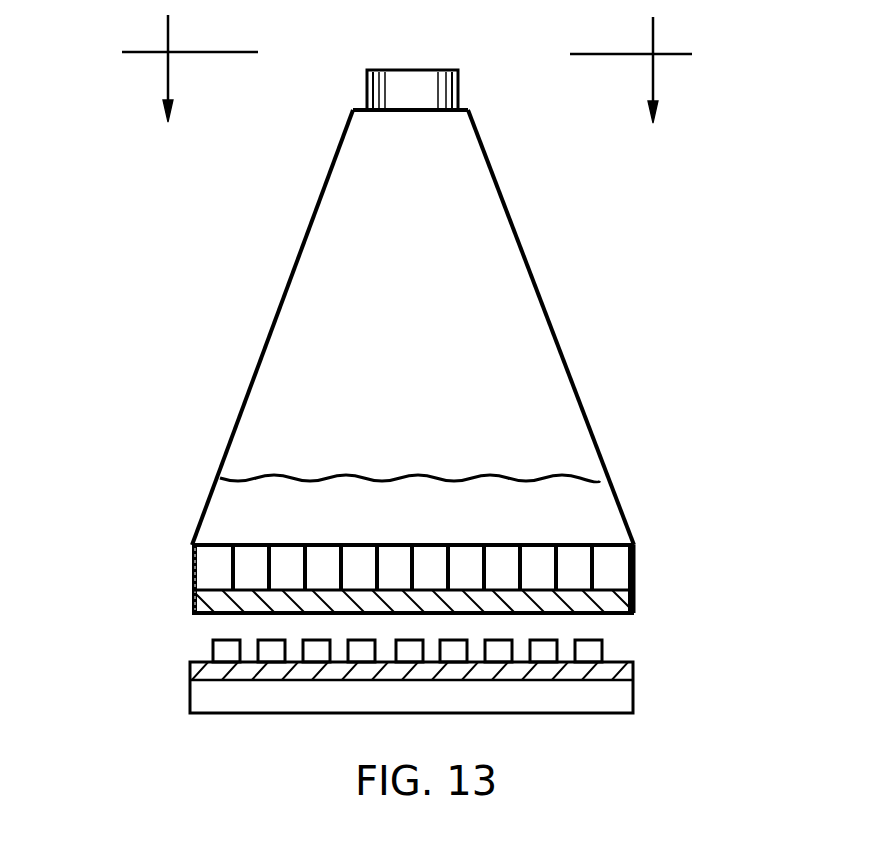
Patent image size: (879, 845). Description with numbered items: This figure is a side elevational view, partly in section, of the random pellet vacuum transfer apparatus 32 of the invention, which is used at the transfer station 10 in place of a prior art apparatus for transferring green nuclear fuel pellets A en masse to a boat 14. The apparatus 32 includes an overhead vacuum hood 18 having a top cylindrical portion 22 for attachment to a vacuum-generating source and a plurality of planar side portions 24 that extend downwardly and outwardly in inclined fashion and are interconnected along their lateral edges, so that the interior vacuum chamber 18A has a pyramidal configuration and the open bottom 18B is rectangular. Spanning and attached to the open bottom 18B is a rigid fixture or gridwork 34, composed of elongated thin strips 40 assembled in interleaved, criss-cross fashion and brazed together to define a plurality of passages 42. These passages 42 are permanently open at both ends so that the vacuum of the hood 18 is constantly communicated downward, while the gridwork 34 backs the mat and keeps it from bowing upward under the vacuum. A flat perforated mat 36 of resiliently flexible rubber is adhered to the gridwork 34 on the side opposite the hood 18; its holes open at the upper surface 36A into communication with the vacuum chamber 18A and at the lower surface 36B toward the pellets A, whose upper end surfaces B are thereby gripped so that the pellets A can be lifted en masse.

The boat 14 is at (410, 69).
The transfer station 10 is at (666, 456).
The vacuum hood 18 is at (556, 312).
The vacuum chamber 18A is at (597, 493).
The open bottom 18B is at (590, 540).
The top cylindrical portion 22 is at (456, 86).
The planar side portions 24 is at (486, 220).
The random pellet vacuum transfer apparatus 32 is at (656, 538).
The gridwork 34 is at (190, 566).
The perforated mat 36 is at (200, 605).
The upper surface 36A is at (606, 592).
The lower surface 36B is at (212, 612).
The strips 40 is at (297, 580).
The passages 42 is at (420, 578).
The pellets A is at (603, 658).
The end surfaces B is at (588, 633).